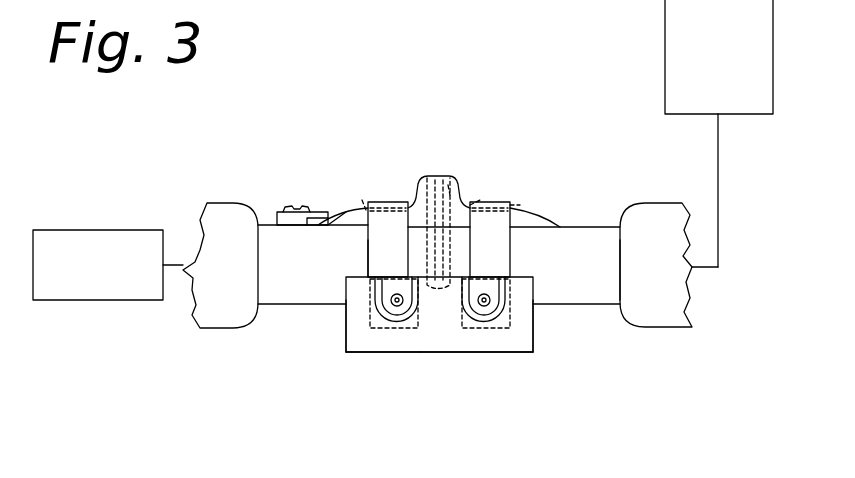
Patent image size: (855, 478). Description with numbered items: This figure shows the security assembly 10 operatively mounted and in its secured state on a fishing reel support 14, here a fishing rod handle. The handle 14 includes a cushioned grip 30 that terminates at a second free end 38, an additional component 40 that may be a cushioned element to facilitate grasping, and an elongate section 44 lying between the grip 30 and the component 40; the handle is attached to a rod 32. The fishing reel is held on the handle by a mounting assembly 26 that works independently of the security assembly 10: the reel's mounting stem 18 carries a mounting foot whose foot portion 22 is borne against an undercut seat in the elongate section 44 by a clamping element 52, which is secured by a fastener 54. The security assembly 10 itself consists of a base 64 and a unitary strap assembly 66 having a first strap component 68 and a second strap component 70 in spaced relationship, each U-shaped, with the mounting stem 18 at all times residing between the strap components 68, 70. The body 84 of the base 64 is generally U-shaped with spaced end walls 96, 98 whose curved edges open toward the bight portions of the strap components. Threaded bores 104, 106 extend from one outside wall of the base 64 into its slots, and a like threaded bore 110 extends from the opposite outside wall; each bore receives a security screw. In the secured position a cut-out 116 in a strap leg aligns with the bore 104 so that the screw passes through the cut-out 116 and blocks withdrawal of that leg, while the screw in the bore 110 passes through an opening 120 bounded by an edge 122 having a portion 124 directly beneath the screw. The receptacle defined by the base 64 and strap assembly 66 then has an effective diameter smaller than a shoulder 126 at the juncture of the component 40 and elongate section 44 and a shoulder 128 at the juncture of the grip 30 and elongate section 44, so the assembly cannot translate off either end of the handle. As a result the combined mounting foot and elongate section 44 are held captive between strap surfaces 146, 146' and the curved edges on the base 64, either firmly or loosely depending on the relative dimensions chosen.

The security assembly 10 is at (478, 358).
The fishing reel support 14 is at (606, 260).
The mounting stem 18 is at (445, 190).
The foot portion 22 is at (347, 212).
The mounting assembly 26 is at (301, 198).
The cushioned grip 30 is at (673, 222).
The rod 32 is at (100, 293).
The second free end 38 is at (724, 104).
The additional component 40 is at (217, 212).
The elongate section 44 is at (565, 288).
The clamping element 52 is at (280, 212).
The fastener 54 is at (287, 207).
The base 64 is at (493, 352).
The unitary strap assembly 66 is at (390, 232).
The first strap component 68 is at (380, 263).
The second strap component 70 is at (502, 250).
The body 84 is at (433, 345).
The end wall 96 is at (345, 337).
The end wall 98 is at (537, 355).
The threaded bore 104 is at (397, 308).
The threaded bore 106 is at (463, 317).
The threaded bore 110 is at (448, 190).
The cut-out 116 is at (423, 303).
The opening 120 is at (470, 205).
The edge 122 is at (412, 300).
The edge portion 124 is at (462, 267).
The shoulder 126 is at (258, 277).
The shoulder 128 is at (617, 283).
The strap surface 146 is at (357, 153).
The strap surface 146' is at (553, 174).